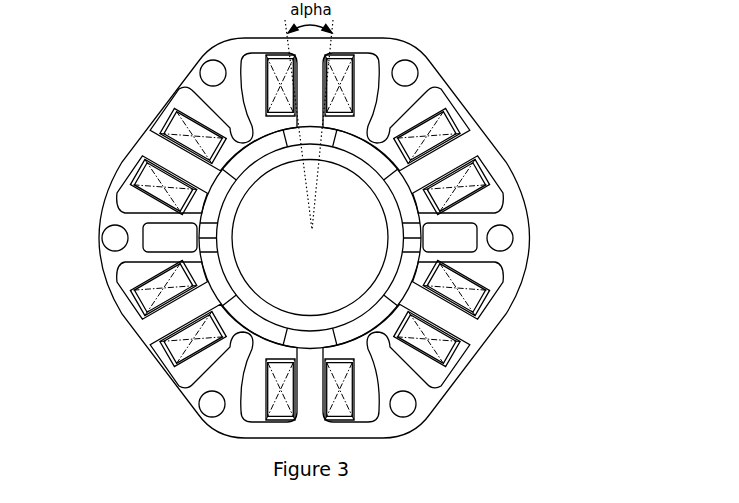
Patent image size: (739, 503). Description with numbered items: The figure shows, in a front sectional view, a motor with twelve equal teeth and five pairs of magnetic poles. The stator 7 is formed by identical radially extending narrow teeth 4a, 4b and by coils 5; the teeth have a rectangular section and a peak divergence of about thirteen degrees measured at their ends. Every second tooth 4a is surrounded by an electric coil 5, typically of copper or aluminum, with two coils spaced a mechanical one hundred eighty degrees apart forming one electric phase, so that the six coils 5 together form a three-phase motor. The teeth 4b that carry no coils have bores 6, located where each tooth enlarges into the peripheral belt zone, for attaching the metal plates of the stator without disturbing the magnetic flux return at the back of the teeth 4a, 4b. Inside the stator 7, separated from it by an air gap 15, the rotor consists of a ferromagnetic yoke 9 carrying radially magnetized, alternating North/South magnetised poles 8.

The tooth 4a is at (200, 168).
The tooth 4b is at (250, 126).
The coil 5 is at (186, 267).
The bore 6 is at (412, 89).
The stator 7 is at (498, 140).
The magnetised poles 8 is at (405, 216).
The ferromagnetic yoke 9 is at (390, 255).
The air gap 15 is at (373, 332).